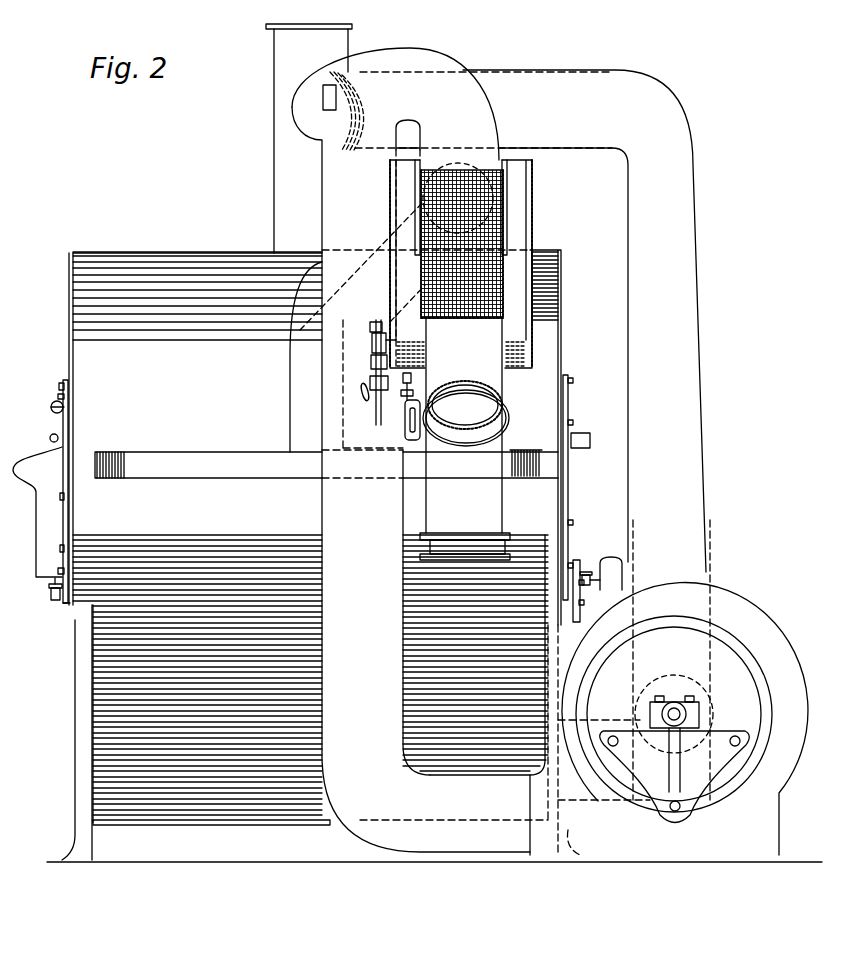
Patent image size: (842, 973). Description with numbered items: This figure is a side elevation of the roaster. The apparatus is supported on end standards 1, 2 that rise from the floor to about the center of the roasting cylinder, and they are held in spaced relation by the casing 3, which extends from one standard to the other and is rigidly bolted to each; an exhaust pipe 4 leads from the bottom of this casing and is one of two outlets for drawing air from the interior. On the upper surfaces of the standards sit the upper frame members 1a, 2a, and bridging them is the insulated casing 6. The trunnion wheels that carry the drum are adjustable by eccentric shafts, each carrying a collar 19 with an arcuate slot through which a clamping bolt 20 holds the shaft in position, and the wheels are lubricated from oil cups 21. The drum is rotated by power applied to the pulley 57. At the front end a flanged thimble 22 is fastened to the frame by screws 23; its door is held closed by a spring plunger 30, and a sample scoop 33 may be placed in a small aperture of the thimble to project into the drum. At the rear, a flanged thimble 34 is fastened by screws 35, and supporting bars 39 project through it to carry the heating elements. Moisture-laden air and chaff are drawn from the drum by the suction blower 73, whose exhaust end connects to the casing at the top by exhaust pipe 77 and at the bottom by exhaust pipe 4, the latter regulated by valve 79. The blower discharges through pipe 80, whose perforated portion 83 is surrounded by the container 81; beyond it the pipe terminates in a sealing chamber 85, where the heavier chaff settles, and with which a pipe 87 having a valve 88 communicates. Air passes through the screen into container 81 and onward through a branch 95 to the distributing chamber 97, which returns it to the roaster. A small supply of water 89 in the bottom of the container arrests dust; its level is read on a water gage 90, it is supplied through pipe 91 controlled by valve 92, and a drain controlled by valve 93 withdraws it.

The end standard 1 is at (75, 820).
The upper frame member 1a is at (68, 353).
The end standard 2 is at (572, 829).
The upper frame member 2a is at (563, 298).
The casing 3 is at (203, 823).
The exhaust pipe 4 is at (605, 720).
The casing 6 is at (165, 253).
The collar 19 is at (65, 605).
The clamping bolt 20 is at (61, 571).
The oil cup 21 is at (50, 597).
The flanged thimble 22 is at (58, 396).
The screws 23 is at (60, 383).
The spring plunger 30 is at (51, 437).
The sample scoop 33 is at (51, 407).
The flanged thimble 34 is at (570, 401).
The screws 35 is at (574, 382).
The supporting bars 39 is at (588, 438).
The pulley 57 is at (620, 576).
The suction blower 73 is at (730, 611).
The exhaust pipe 77 is at (695, 244).
The regulating valve 79 is at (328, 86).
The pipe 80 is at (432, 60).
The container 81 is at (525, 226).
The perforated portion 83 is at (472, 320).
The sealing chamber 85 is at (505, 511).
The pipe 87 is at (502, 396).
The valve 88 is at (405, 428).
The water 89 is at (530, 356).
The water gage 90 is at (372, 345).
The pipe 91 is at (376, 415).
The valve 92 is at (370, 390).
The valve 93 is at (412, 384).
The branch 95 is at (292, 408).
The distributing chamber 97 is at (178, 455).